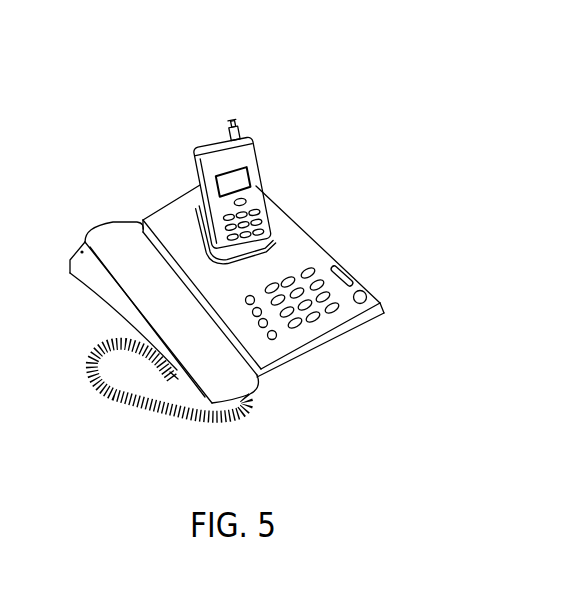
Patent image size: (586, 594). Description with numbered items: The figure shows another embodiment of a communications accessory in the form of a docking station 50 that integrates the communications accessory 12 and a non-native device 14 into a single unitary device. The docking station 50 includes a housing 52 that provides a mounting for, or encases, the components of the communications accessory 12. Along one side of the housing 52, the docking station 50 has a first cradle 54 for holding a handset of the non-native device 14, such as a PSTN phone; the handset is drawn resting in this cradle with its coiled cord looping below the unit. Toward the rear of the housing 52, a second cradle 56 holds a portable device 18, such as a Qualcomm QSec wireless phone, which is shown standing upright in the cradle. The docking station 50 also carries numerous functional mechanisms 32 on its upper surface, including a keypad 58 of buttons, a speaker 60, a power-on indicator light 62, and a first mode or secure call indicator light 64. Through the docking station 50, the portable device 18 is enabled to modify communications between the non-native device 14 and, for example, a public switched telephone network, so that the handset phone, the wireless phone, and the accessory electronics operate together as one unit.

The docking station 50 is at (413, 151).
The communications accessory 12 is at (326, 238).
The non-native device 14 is at (110, 223).
The portable device 18 is at (218, 134).
The functional mechanisms 32 is at (349, 258).
The housing 52 is at (332, 335).
The first cradle 54 is at (82, 252).
The second cradle 56 is at (186, 193).
The keypad 58 is at (333, 306).
The speaker 60 is at (103, 303).
The power-on indicator light 62 is at (266, 212).
The secure call indicator light 64 is at (293, 226).